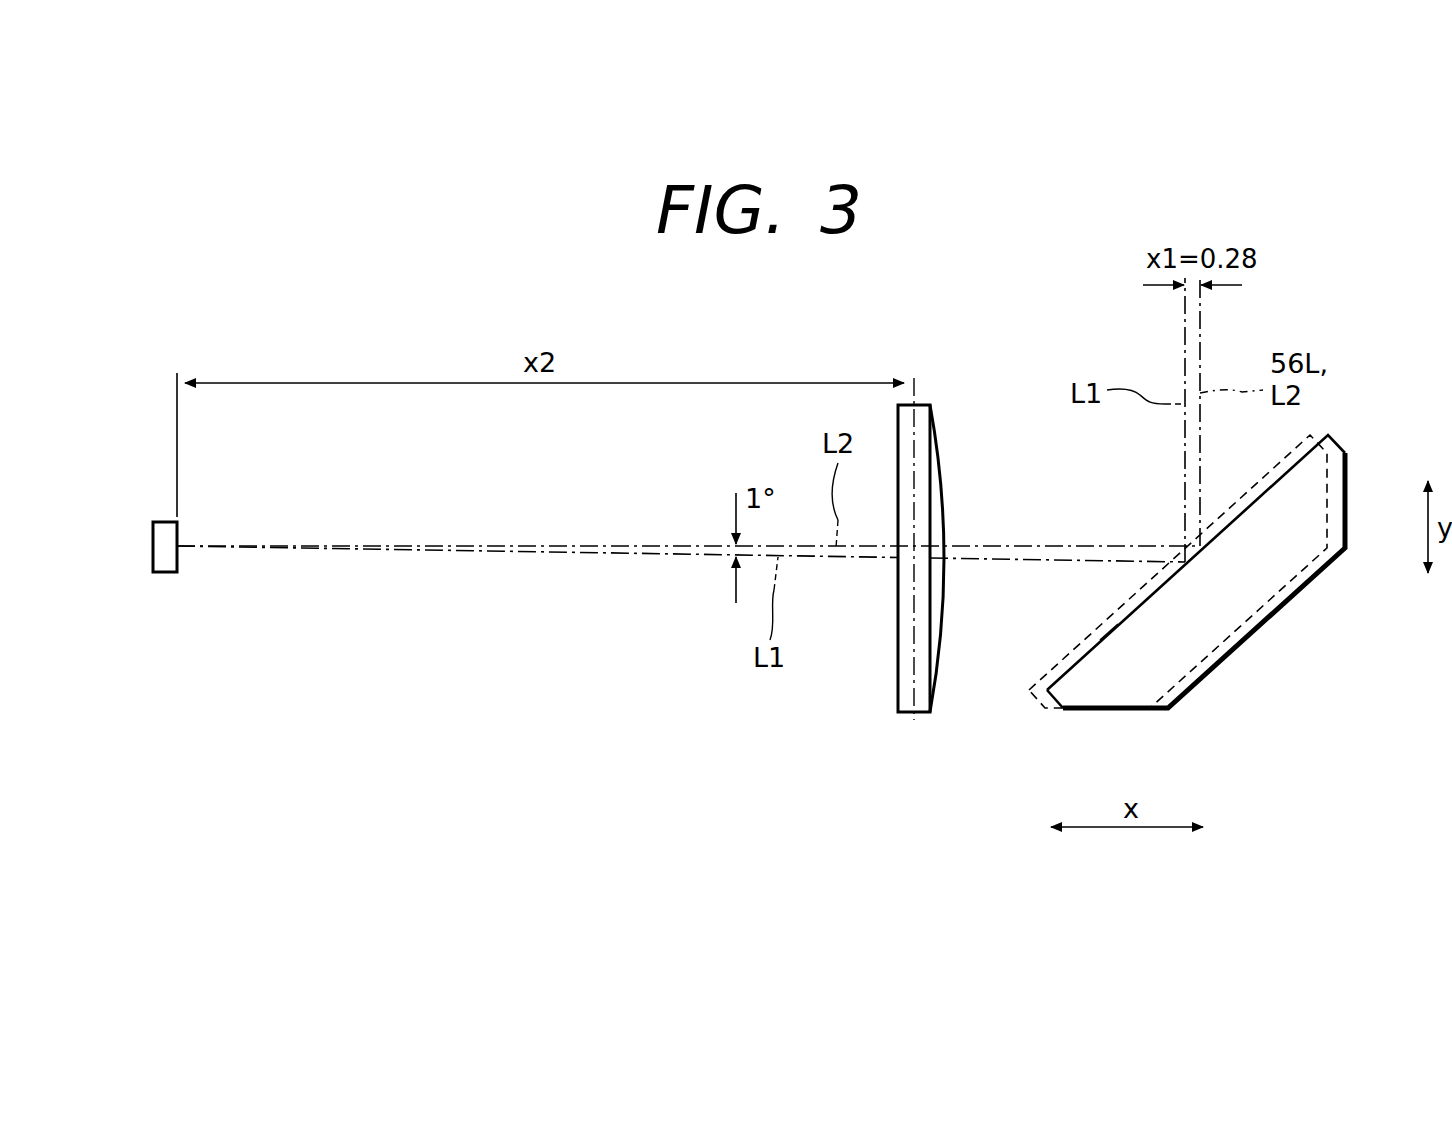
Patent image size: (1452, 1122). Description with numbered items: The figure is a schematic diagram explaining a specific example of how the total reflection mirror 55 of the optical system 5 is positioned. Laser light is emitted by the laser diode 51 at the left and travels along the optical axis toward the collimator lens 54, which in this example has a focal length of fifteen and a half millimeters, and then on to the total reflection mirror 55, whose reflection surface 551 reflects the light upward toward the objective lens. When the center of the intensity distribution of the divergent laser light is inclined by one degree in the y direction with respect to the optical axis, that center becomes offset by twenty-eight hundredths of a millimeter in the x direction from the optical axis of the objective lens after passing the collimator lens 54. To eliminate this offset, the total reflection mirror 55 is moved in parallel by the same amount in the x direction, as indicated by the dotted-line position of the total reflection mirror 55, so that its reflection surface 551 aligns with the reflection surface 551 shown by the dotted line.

The optical system 5 is at (545, 638).
The laser diode 51 is at (163, 575).
The collimator lens 54 is at (935, 668).
The total reflection mirror 55 is at (1230, 655).
The reflection surface 551 is at (1100, 637).